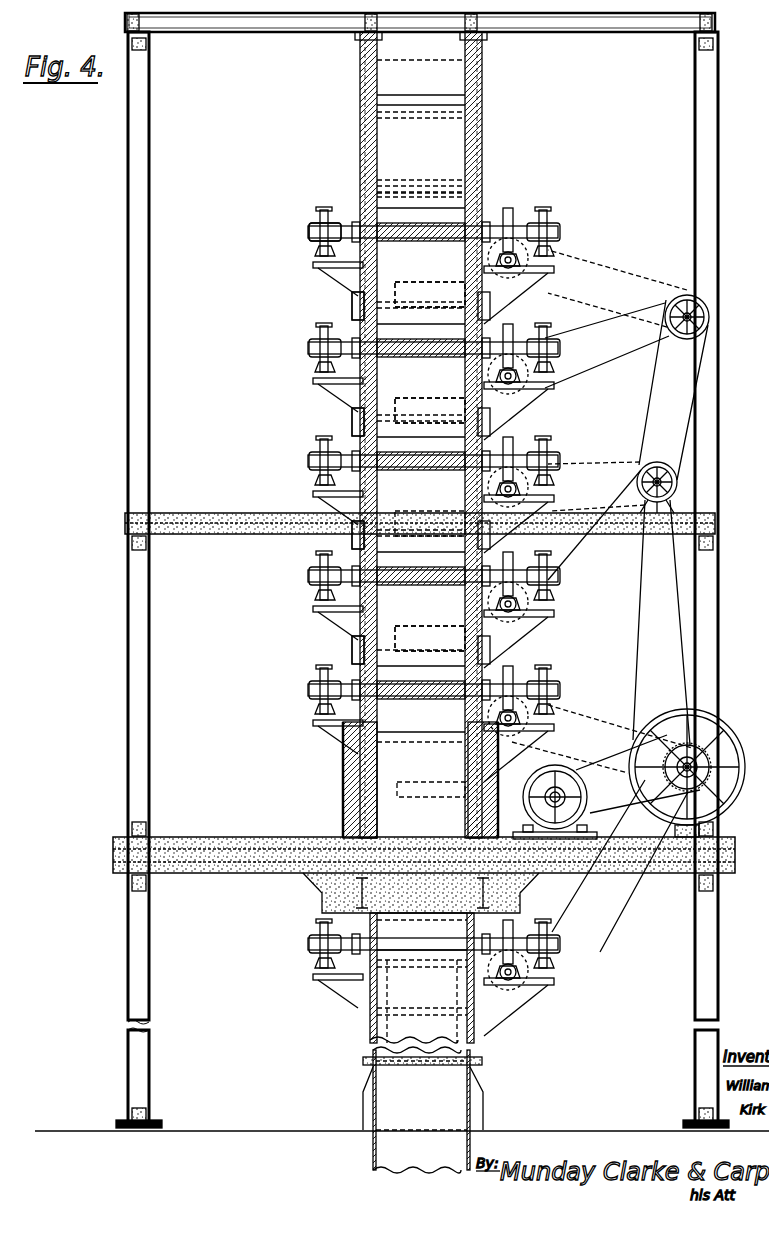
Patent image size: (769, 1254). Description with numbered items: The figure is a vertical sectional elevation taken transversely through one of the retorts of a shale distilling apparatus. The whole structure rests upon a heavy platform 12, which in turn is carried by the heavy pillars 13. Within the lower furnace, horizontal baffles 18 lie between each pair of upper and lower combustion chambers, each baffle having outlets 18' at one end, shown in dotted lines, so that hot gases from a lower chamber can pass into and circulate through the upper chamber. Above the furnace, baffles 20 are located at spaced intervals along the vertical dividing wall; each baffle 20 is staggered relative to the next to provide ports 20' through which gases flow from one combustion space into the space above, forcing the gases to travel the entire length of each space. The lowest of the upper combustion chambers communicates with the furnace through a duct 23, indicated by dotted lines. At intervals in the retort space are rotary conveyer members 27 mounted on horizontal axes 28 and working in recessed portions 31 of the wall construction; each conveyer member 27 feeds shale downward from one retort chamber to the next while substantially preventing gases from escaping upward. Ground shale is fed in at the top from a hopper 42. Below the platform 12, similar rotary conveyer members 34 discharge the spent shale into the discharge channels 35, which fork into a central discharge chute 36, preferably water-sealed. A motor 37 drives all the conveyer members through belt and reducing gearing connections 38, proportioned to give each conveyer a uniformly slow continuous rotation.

The platform 12 is at (312, 877).
The pillars 13 is at (487, 1092).
The horizontal baffles 18 is at (421, 764).
The outlets 18' is at (395, 780).
The baffles 20 is at (323, 478).
The ports 20' is at (369, 460).
The duct 23 is at (343, 762).
The rotary conveyer members 27 is at (460, 199).
The horizontal axes 28 is at (308, 234).
The recessed portions 31 is at (378, 196).
The rotary conveyer members 34 is at (437, 950).
The discharge channels 35 is at (367, 1030).
The central discharge chute 36 is at (398, 1101).
The motor 37 is at (556, 788).
The belt and reducing gearing connections 38 is at (693, 750).
The hopper 42 is at (421, 68).